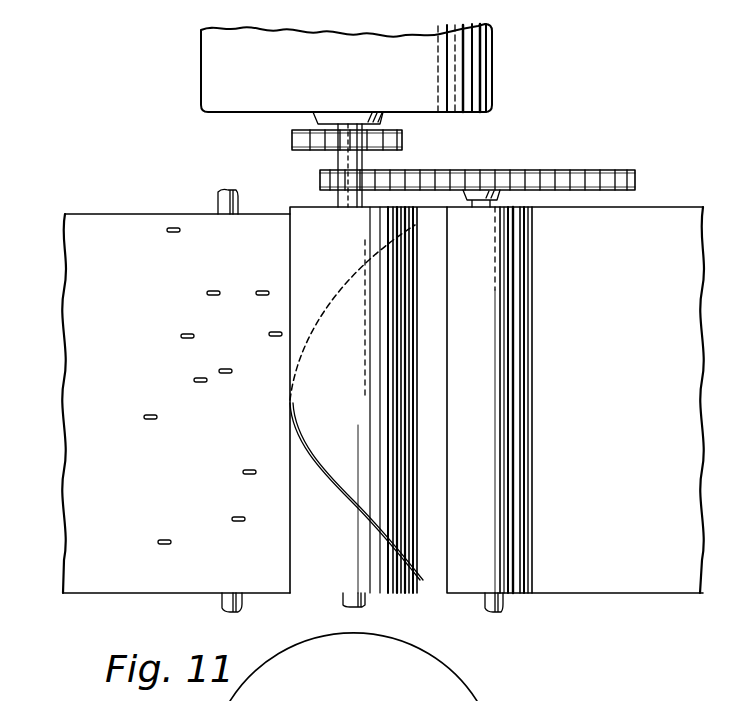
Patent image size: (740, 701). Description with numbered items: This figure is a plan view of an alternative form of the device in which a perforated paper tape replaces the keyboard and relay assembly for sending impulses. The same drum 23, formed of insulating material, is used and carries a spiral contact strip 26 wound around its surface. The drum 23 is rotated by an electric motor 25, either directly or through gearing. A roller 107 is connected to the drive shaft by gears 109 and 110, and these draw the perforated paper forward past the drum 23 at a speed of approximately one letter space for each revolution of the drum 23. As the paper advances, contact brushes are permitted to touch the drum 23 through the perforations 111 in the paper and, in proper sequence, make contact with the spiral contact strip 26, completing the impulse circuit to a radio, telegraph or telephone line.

The drum 23 is at (290, 455).
The electric motor 25 is at (486, 85).
The spiral contact strip 26 is at (347, 490).
The roller 107 is at (515, 385).
The gear 109 is at (593, 168).
The gear 110 is at (322, 180).
The slots 111 is at (257, 290).